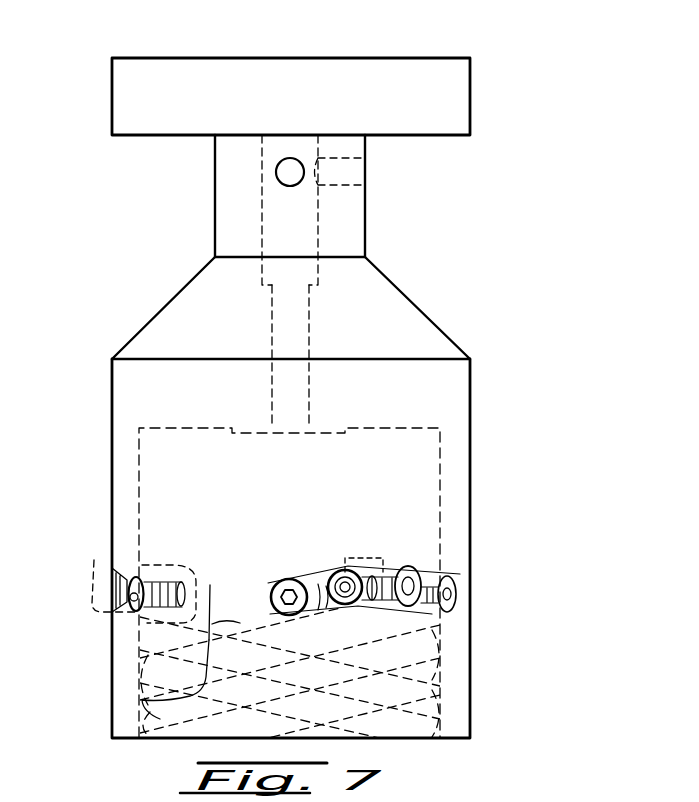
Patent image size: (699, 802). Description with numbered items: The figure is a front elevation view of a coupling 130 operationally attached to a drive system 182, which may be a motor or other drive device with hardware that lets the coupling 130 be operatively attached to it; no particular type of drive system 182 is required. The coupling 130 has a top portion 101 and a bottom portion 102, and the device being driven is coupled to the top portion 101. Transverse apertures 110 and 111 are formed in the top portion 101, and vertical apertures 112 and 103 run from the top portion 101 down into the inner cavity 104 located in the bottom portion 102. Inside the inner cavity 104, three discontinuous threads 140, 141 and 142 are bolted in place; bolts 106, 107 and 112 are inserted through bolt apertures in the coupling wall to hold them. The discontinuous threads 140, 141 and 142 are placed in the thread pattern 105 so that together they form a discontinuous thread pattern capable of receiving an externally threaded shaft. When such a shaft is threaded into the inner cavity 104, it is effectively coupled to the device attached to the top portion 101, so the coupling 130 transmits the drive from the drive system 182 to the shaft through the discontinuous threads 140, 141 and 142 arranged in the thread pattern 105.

The drive system 182 is at (375, 58).
The top portion 101 is at (227, 207).
The transverse aperture 110 is at (292, 160).
The transverse aperture 111 is at (345, 188).
The coupling 130 is at (477, 237).
The bottom portion 102 is at (456, 712).
The vertical aperture 103 is at (309, 405).
The inner cavity 104 is at (310, 477).
The vertical aperture / bolt 112 is at (318, 267).
The bolt 107 is at (448, 574).
The bolt 106 is at (94, 560).
The discontinuous thread 140 is at (176, 560).
The discontinuous thread 141 is at (260, 582).
The thread pattern 105 is at (142, 699).
The discontinuous thread 142 is at (460, 658).